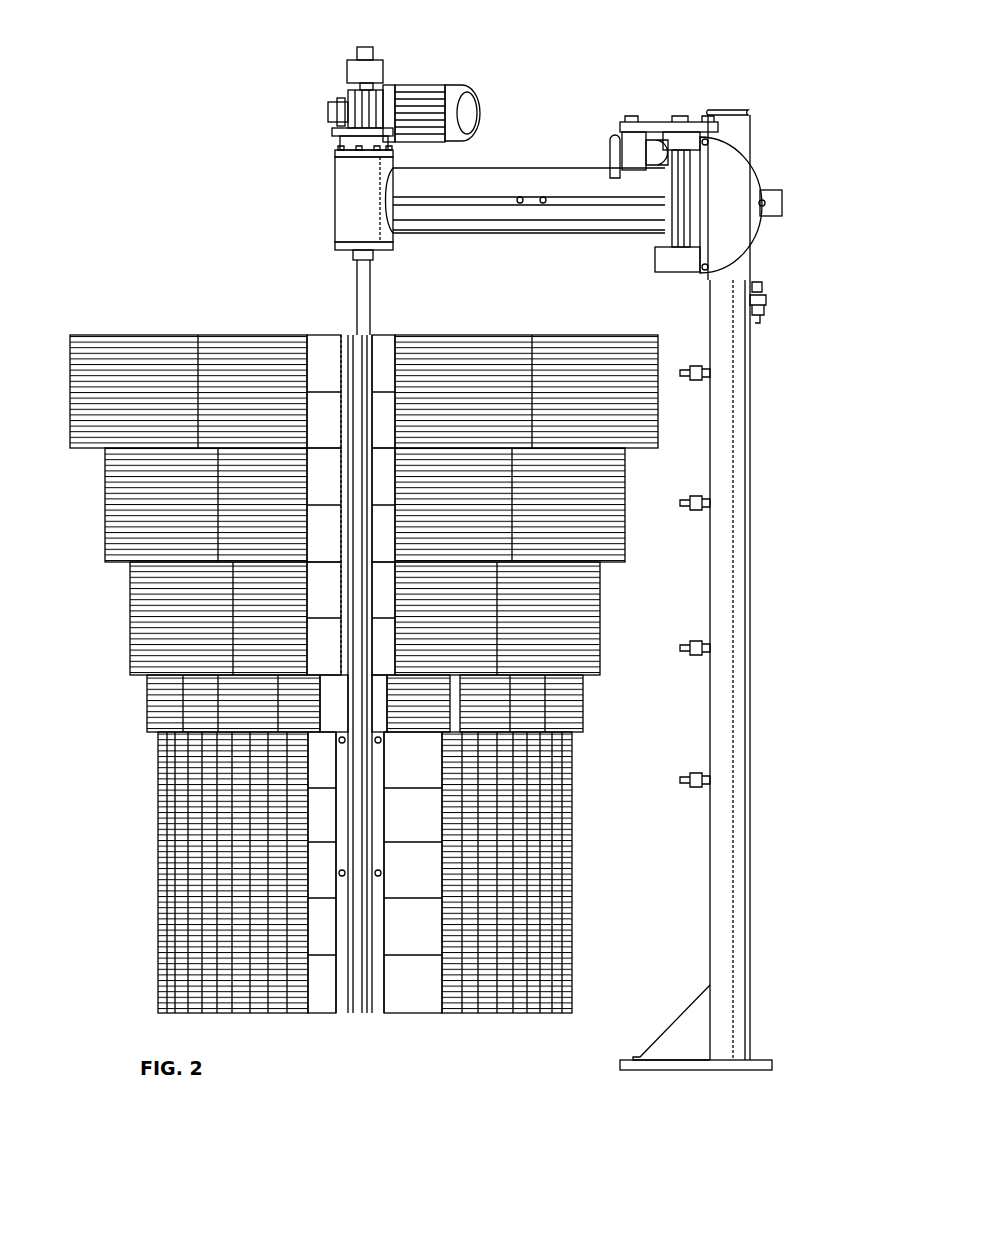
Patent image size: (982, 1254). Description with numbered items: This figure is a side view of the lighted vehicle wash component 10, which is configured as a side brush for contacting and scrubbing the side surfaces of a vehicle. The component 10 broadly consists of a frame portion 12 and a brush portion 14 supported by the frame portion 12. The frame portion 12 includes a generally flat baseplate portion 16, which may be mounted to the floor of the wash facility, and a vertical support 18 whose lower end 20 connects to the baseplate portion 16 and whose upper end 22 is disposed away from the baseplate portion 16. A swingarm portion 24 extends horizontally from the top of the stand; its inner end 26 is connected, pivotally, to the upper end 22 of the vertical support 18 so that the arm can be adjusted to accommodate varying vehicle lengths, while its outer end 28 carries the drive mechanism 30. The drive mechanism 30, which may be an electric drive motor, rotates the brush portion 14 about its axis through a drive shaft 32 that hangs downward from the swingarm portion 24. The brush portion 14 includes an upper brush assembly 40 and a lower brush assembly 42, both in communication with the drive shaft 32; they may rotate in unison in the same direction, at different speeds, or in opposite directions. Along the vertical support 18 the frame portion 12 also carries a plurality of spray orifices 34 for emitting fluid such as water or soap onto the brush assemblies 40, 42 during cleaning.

The lighted vehicle wash component 10 is at (563, 145).
The frame portion 12 is at (720, 698).
The brush portion 14 is at (352, 620).
The baseplate portion 16 is at (668, 1052).
The vertical support 18 is at (740, 702).
The lower end 20 is at (738, 1048).
The upper end 22 is at (740, 130).
The swingarm portion 24 is at (552, 168).
The inner end 26 is at (658, 178).
The outer end 28 is at (402, 182).
The drive mechanism 30 is at (390, 56).
The drive shaft 32 is at (362, 320).
The spray orifices 34 is at (756, 344).
The upper brush assembly 40 is at (112, 602).
The lower brush assembly 42 is at (128, 857).